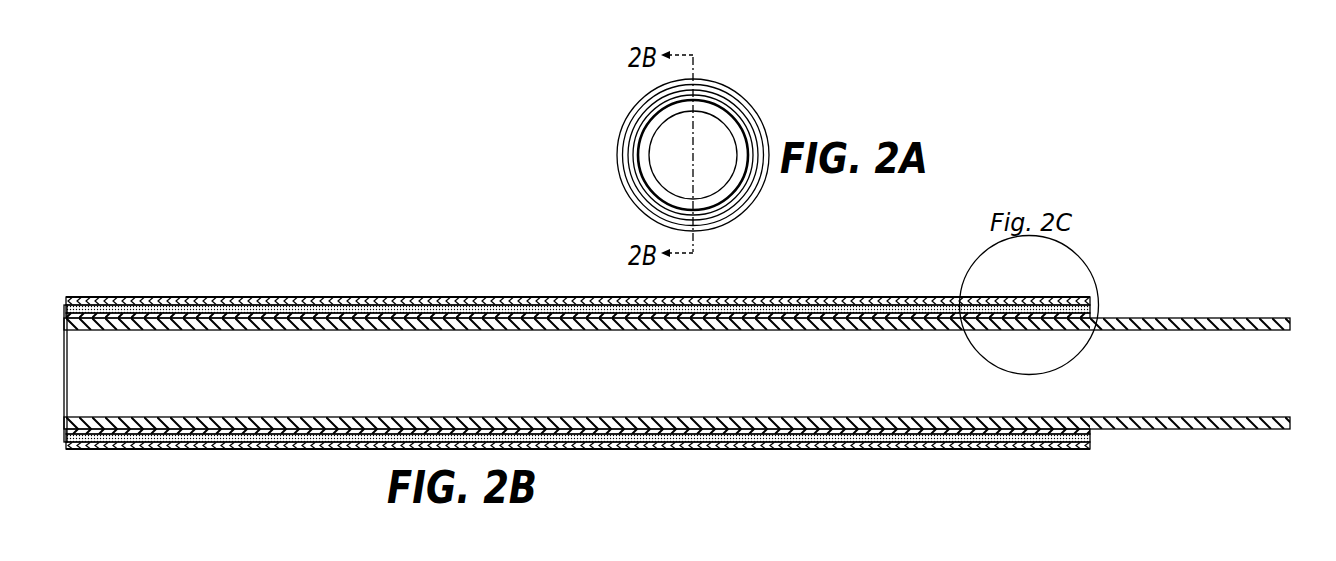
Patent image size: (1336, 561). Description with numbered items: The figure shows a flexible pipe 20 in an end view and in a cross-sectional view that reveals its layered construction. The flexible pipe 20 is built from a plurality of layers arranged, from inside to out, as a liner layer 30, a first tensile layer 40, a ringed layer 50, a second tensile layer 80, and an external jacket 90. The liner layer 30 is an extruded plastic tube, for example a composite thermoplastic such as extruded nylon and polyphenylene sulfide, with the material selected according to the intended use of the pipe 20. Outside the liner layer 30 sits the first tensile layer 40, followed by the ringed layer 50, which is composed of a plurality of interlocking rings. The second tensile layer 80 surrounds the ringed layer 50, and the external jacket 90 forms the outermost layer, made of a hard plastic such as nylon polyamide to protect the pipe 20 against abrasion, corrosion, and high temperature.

In FIG. 2A, the flexible pipe 20 is at (590, 125).
In FIG. 2B, the flexible pipe 20 is at (114, 219).
In FIG. 2B, the liner layer 30 is at (1243, 318).
In FIG. 2B, the first tensile layer 40 is at (432, 322).
In FIG. 2B, the ringed layer 50 is at (400, 297).
In FIG. 2B, the second tensile layer 80 is at (307, 297).
In FIG. 2B, the external jacket 90 is at (237, 297).